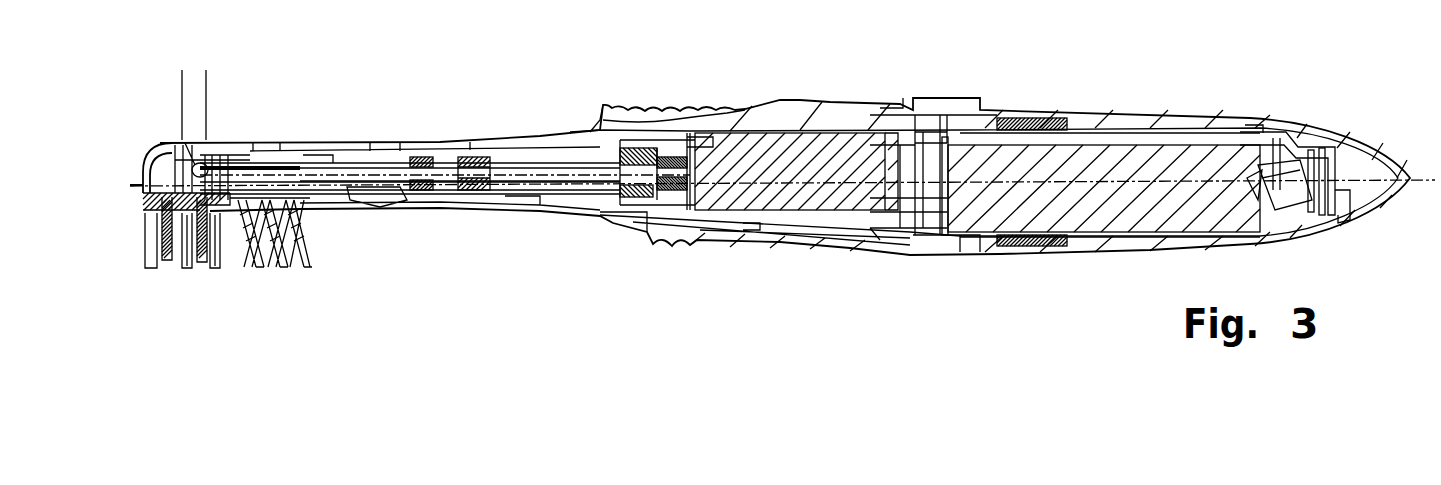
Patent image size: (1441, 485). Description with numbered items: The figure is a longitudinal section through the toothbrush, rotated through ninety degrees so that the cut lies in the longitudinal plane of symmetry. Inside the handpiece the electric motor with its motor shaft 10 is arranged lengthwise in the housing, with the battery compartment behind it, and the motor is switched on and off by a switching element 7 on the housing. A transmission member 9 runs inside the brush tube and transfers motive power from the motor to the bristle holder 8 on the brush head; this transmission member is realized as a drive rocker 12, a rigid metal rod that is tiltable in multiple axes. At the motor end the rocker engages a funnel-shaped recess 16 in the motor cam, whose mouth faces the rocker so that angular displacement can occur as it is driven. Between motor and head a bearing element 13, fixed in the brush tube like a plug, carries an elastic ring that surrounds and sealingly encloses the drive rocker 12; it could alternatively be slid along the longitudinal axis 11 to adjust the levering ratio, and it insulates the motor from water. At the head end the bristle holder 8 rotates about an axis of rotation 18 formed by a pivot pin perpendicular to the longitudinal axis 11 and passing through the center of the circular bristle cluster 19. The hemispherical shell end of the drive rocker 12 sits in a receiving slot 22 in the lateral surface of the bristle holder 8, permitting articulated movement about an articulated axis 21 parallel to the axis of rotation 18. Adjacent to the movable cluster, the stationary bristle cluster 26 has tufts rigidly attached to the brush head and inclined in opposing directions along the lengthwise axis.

The switching element 7 is at (793, 225).
The bristle holder 8 is at (142, 207).
The transmission member 9 is at (526, 188).
The motor shaft 10 is at (683, 135).
The longitudinal axis 11 is at (1367, 177).
The drive rocker 12 is at (413, 200).
The bearing element 13 is at (433, 197).
The recess 16 is at (608, 148).
The axis of rotation 18 is at (167, 140).
The bristle cluster 19 is at (183, 250).
The articulated axis 21 is at (207, 110).
The receiving slot 22 is at (222, 255).
The stationary bristle cluster 26 is at (305, 262).